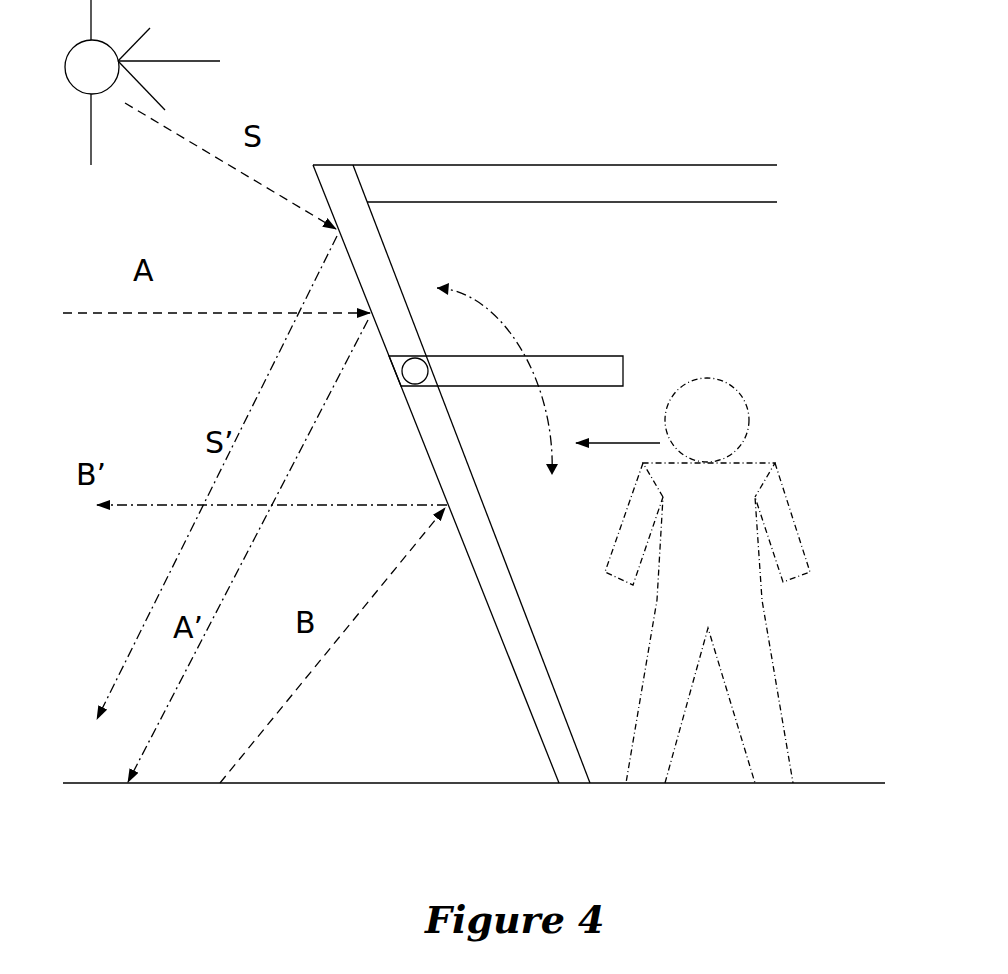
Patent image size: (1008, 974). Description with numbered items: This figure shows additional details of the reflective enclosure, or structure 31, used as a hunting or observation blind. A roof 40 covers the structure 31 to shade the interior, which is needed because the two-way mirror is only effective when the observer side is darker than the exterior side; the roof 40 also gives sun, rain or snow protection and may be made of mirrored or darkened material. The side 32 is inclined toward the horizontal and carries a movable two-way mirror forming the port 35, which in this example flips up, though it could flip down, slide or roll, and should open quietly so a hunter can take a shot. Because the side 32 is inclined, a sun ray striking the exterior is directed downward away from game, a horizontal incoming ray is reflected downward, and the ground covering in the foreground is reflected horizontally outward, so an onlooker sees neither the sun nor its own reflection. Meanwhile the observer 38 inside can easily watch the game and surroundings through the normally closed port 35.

The structure 31 is at (474, 411).
The roof 40 is at (545, 183).
The side 32 is at (538, 688).
The port 35 is at (525, 387).
The observer 38 is at (707, 594).